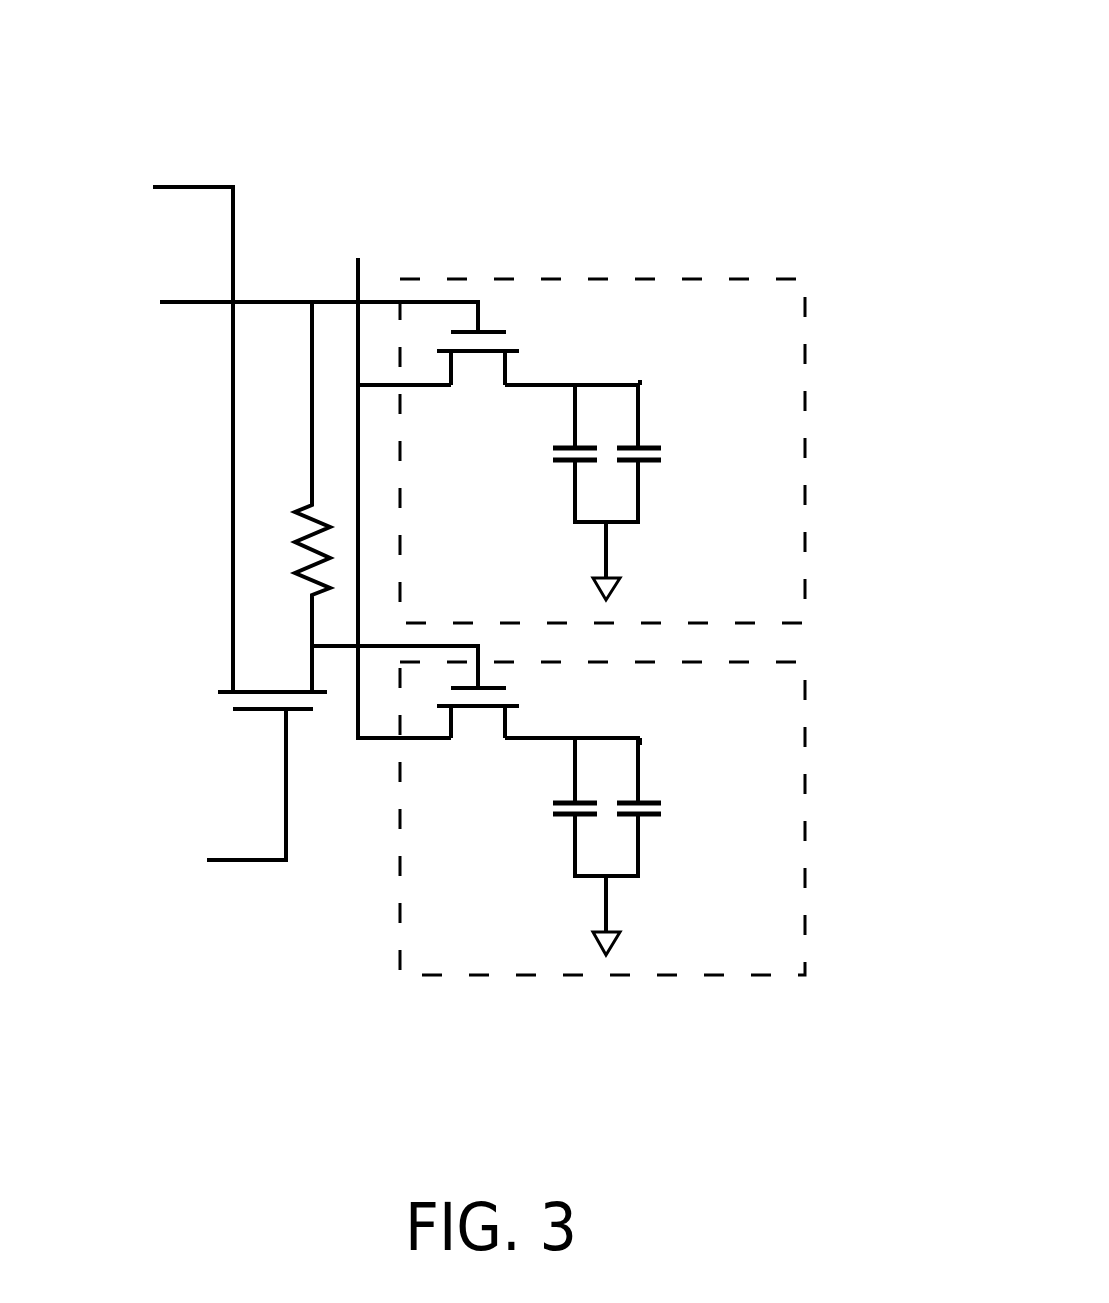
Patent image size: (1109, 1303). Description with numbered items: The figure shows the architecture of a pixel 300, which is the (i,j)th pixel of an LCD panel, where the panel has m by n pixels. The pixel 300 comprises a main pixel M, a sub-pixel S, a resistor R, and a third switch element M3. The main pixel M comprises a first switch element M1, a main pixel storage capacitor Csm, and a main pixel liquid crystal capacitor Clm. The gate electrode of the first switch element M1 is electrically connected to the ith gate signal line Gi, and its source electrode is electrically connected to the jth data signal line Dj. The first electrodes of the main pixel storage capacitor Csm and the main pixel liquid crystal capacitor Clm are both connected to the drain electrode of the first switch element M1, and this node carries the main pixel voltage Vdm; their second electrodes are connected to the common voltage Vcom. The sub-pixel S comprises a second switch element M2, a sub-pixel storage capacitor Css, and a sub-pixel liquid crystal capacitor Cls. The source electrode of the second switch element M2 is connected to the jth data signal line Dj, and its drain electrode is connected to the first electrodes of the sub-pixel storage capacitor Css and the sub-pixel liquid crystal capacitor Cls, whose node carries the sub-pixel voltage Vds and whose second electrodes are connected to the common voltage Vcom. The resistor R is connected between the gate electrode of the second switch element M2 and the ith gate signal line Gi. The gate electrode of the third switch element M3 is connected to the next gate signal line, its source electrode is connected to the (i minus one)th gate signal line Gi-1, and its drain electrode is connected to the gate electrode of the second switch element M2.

The pixel 300 is at (743, 128).
The main pixel M is at (805, 477).
The sub-pixel S is at (805, 820).
The first switch element M1 is at (478, 386).
The second switch element M2 is at (478, 739).
The third switch element M3 is at (245, 674).
The resistor R is at (361, 497).
The main pixel storage capacitor Csm is at (545, 453).
The main pixel liquid crystal capacitor Clm is at (676, 453).
The sub-pixel storage capacitor Css is at (558, 807).
The sub-pixel liquid crystal capacitor Cls is at (666, 807).
The main pixel voltage Vdm is at (645, 380).
The sub-pixel voltage Vds is at (655, 748).
The common voltage Vcom is at (554, 744).
The (i-1)th gate signal line Gi-1 is at (153, 422).
The ith gate signal line Gi is at (296, 301).
The jth data signal line Dj is at (394, 473).